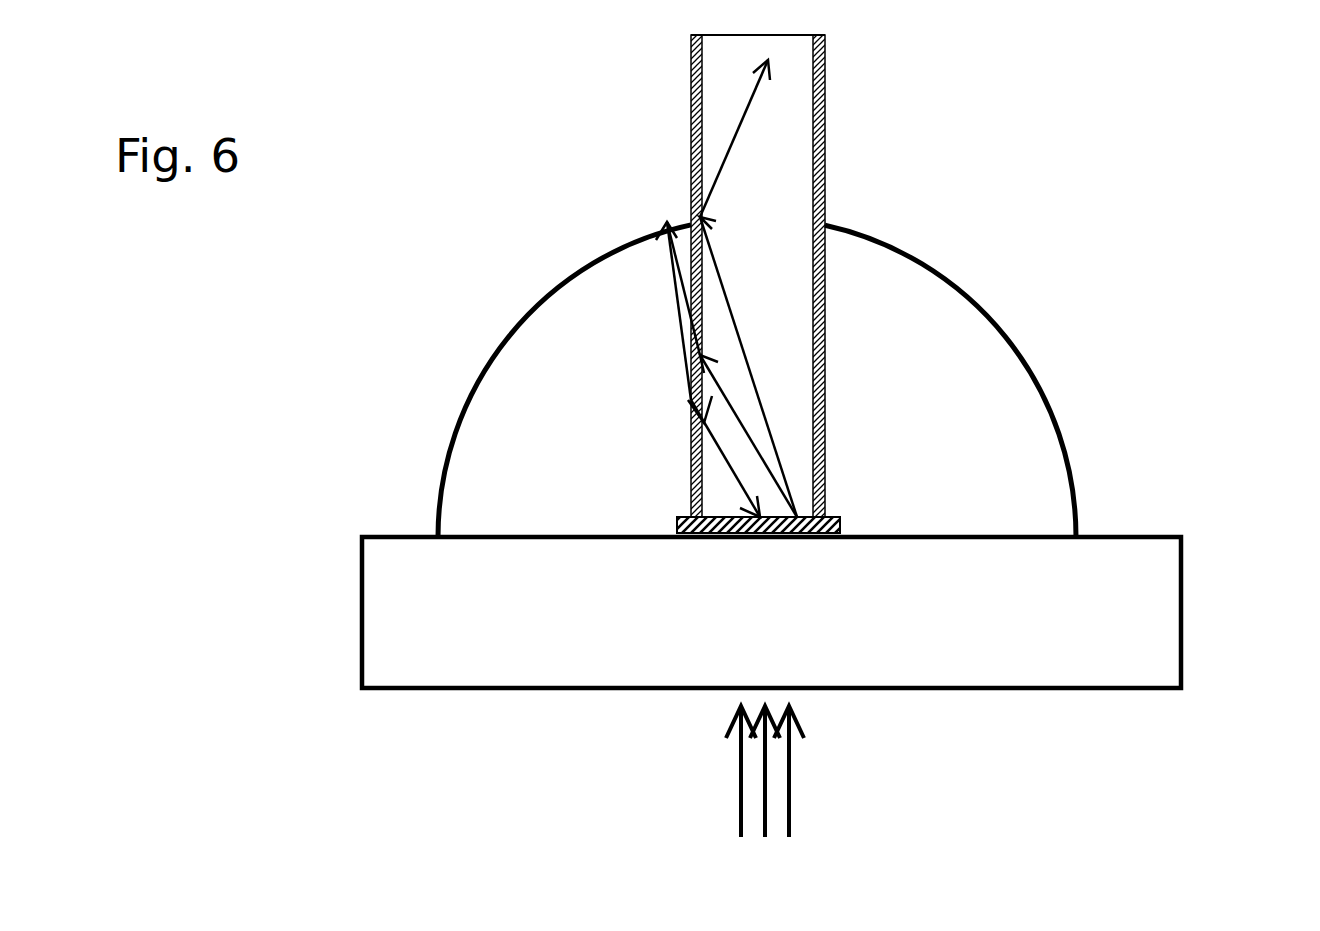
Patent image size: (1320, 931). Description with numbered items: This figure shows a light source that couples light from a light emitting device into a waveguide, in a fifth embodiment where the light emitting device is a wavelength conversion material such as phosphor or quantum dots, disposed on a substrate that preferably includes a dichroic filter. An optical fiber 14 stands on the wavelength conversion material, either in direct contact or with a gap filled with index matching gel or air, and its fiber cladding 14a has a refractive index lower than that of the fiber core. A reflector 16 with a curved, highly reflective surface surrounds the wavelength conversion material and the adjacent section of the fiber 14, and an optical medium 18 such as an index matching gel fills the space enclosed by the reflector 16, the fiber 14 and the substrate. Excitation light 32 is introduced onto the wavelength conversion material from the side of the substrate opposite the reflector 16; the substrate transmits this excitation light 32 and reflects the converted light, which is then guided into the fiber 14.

The optical fiber 14 is at (720, 72).
The fiber cladding 14a is at (693, 118).
The reflector 16 is at (525, 302).
The optical medium 18 is at (1020, 468).
The excitation light 32 is at (791, 795).